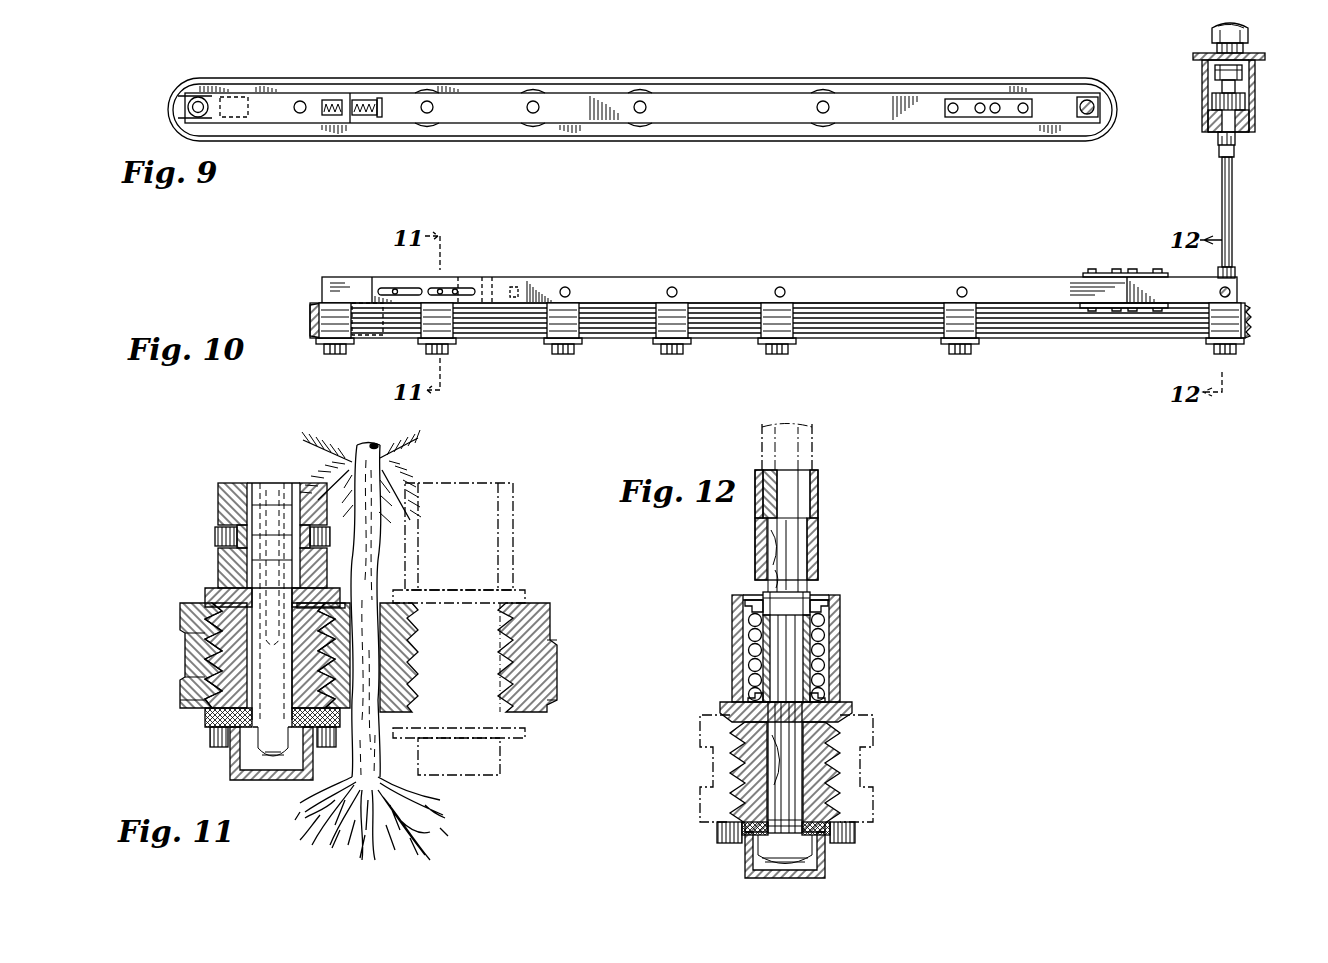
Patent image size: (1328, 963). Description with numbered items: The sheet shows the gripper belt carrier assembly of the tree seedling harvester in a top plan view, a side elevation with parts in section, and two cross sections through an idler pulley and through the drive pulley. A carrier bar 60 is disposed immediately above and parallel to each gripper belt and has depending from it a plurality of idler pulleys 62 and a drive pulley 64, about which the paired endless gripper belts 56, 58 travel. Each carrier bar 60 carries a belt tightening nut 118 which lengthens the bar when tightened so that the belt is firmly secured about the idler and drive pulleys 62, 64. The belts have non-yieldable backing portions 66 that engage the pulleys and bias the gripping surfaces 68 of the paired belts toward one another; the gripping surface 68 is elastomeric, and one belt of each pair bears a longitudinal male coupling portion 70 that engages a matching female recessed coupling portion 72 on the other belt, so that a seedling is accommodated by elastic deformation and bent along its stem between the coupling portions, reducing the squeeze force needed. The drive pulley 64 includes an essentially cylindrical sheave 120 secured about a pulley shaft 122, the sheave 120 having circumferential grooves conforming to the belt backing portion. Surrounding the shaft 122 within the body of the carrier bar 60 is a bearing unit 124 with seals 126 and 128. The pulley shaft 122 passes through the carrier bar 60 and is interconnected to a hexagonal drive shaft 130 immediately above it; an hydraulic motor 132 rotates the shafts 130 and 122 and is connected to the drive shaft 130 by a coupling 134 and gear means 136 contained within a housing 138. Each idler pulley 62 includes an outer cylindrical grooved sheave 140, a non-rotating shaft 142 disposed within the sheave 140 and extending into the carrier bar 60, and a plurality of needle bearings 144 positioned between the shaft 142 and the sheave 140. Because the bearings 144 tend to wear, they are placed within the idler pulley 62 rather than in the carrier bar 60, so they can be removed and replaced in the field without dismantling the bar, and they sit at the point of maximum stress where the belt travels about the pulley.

In FIG. 11, the gripper belt 56 is at (171, 617).
In FIG. 11, the gripper belt 58 is at (560, 605).
In FIG. 9, the carrier bar 60 is at (690, 101).
In FIG. 10, the carrier bar 60 is at (733, 278).
In FIG. 11, the carrier bar 60 is at (218, 500).
In FIG. 12, the carrier bar 60 is at (840, 653).
In FIG. 9, the idler pulley 62 is at (530, 90).
In FIG. 10, the idler pulley 62 is at (647, 359).
In FIG. 11, the idler pulley 62 is at (198, 592).
In FIG. 9, the drive pulley 64 is at (1104, 106).
In FIG. 10, the drive pulley 64 is at (1200, 349).
In FIG. 12, the drive pulley 64 is at (868, 705).
In FIG. 11, the non-yieldable backing portion 66 is at (205, 718).
In FIG. 11, the gripping surface 68 is at (180, 694).
In FIG. 11, the male coupling portion 70 is at (557, 660).
In FIG. 11, the female recessed coupling portion 72 is at (185, 655).
In FIG. 9, the belt tightening nut 118 is at (352, 99).
In FIG. 10, the belt tightening nut 118 is at (492, 288).
In FIG. 12, the sheave 120 is at (815, 777).
In FIG. 12, the pulley shaft 122 is at (780, 800).
In FIG. 12, the bearing unit 124 is at (748, 653).
In FIG. 12, the seal 126 is at (733, 699).
In FIG. 12, the seal 128 is at (755, 598).
In FIG. 10, the hexagonal drive shaft 130 is at (1230, 202).
In FIG. 12, the hexagonal drive shaft 130 is at (790, 497).
In FIG. 10, the hydraulic motor 132 is at (1246, 34).
In FIG. 10, the coupling 134 is at (1244, 72).
In FIG. 10, the gear means 136 is at (1246, 102).
In FIG. 10, the housing 138 is at (1202, 96).
In FIG. 11, the sheave 140 is at (212, 735).
In FIG. 11, the non-rotating shaft 142 is at (240, 760).
In FIG. 11, the needle bearings 144 is at (340, 604).